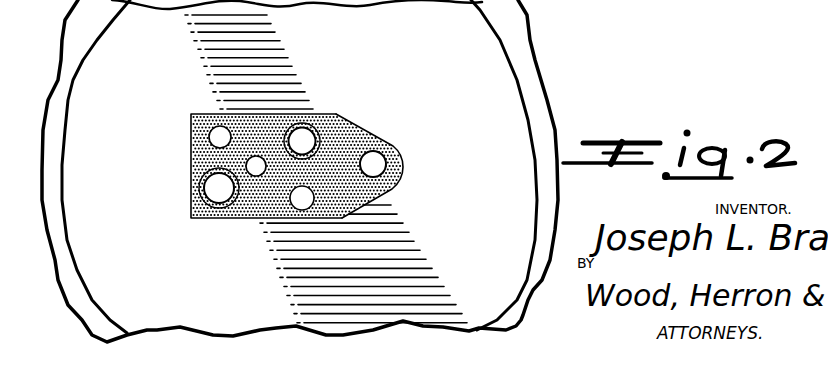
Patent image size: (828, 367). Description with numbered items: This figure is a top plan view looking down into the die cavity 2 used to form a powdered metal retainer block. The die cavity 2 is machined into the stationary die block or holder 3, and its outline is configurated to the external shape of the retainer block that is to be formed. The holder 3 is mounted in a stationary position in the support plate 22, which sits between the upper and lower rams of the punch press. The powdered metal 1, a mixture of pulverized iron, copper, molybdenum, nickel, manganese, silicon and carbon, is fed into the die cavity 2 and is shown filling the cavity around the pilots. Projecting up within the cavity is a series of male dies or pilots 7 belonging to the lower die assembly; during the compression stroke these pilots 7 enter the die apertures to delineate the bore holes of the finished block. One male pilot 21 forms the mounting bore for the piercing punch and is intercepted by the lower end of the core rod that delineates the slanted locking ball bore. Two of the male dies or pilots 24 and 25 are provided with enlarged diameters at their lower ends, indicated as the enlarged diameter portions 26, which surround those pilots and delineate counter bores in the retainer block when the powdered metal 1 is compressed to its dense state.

The powdered metal 1 is at (338, 136).
The die cavity 2 is at (199, 155).
The die block or holder 3 is at (483, 50).
The male dies or pilots 7 is at (380, 149).
The male pilot 21 is at (393, 168).
The support plate 22 is at (547, 107).
The male die or pilot 24 is at (303, 140).
The male die or pilot 25 is at (218, 192).
The enlarged diameter portions 26 is at (338, 143).